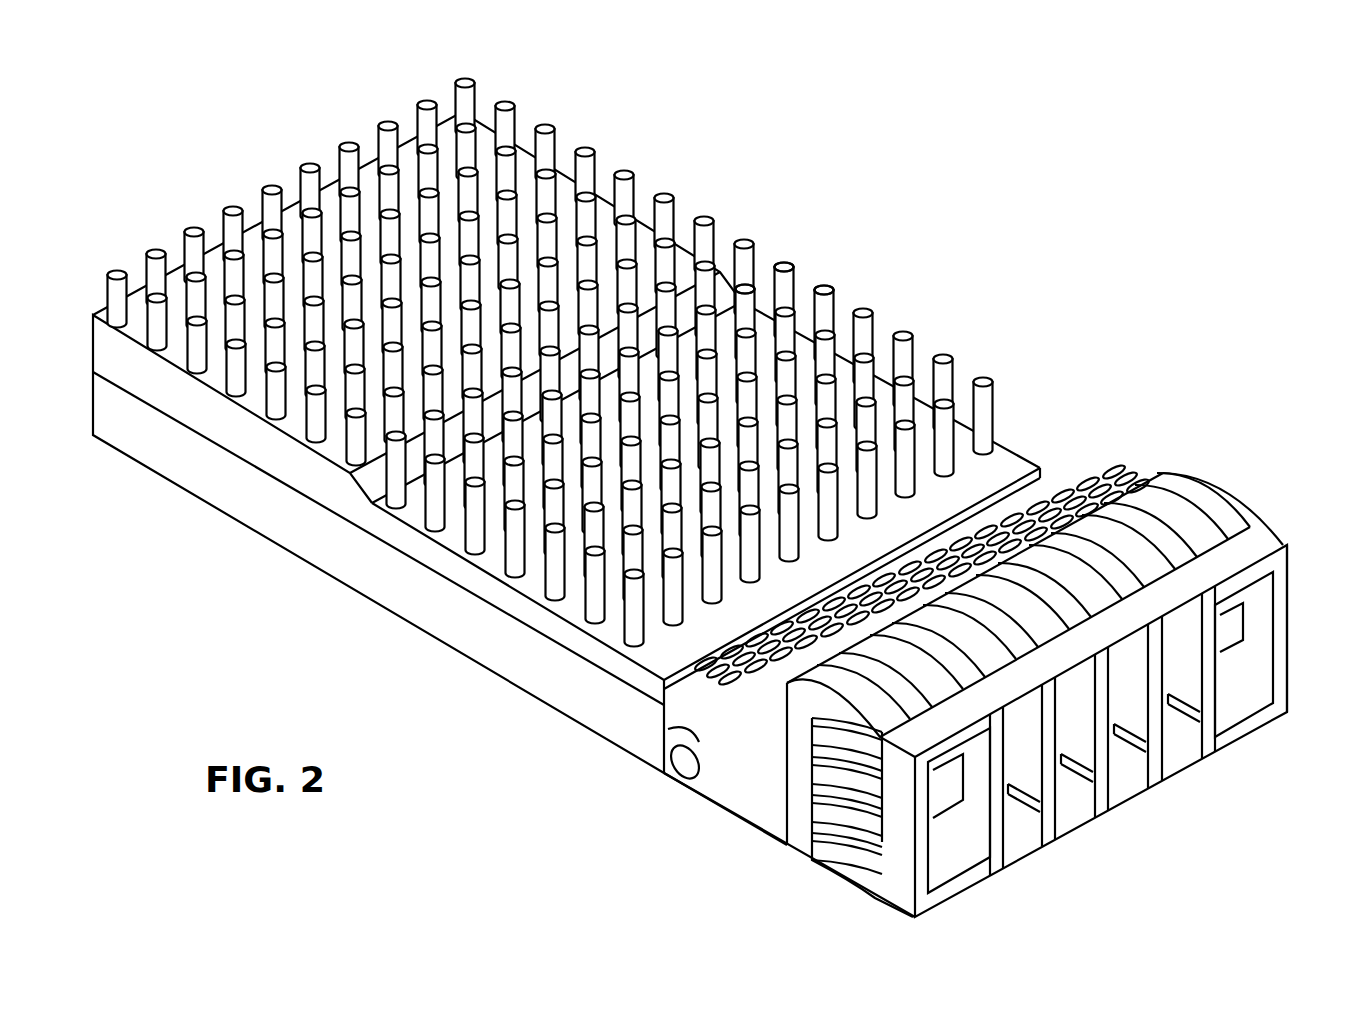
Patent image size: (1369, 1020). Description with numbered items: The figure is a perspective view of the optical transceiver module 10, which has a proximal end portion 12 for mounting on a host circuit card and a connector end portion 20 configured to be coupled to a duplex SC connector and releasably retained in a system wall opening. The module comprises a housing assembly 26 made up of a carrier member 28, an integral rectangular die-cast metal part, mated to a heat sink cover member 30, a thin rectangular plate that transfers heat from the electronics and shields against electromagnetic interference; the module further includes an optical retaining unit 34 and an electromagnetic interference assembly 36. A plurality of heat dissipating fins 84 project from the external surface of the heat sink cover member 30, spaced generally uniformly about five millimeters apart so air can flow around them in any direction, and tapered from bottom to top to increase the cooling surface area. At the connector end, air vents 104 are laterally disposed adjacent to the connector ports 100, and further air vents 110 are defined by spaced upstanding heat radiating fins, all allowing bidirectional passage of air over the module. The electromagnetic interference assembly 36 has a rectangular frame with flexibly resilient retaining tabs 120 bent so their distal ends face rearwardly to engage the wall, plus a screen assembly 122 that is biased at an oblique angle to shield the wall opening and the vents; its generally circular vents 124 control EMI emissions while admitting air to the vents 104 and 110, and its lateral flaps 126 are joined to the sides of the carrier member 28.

The optical transceiver module 10 is at (746, 117).
The proximal end portion 12 is at (547, 110).
The connector end portion 20 is at (1243, 474).
The housing assembly 26 is at (302, 582).
The carrier member 28 is at (102, 400).
The heat sink cover member 30 is at (102, 346).
The optical retaining unit 34 is at (1287, 520).
The electromagnetic interference assembly 36 is at (1176, 450).
The fins 84 is at (823, 289).
The connector ports 100 is at (1127, 762).
The air vents 104 is at (1237, 710).
The air vents 110 is at (1165, 690).
The retaining tabs 120 is at (810, 737).
The screen assembly 122 is at (727, 790).
The vents 124 is at (1108, 468).
The lateral flaps 126 is at (668, 729).